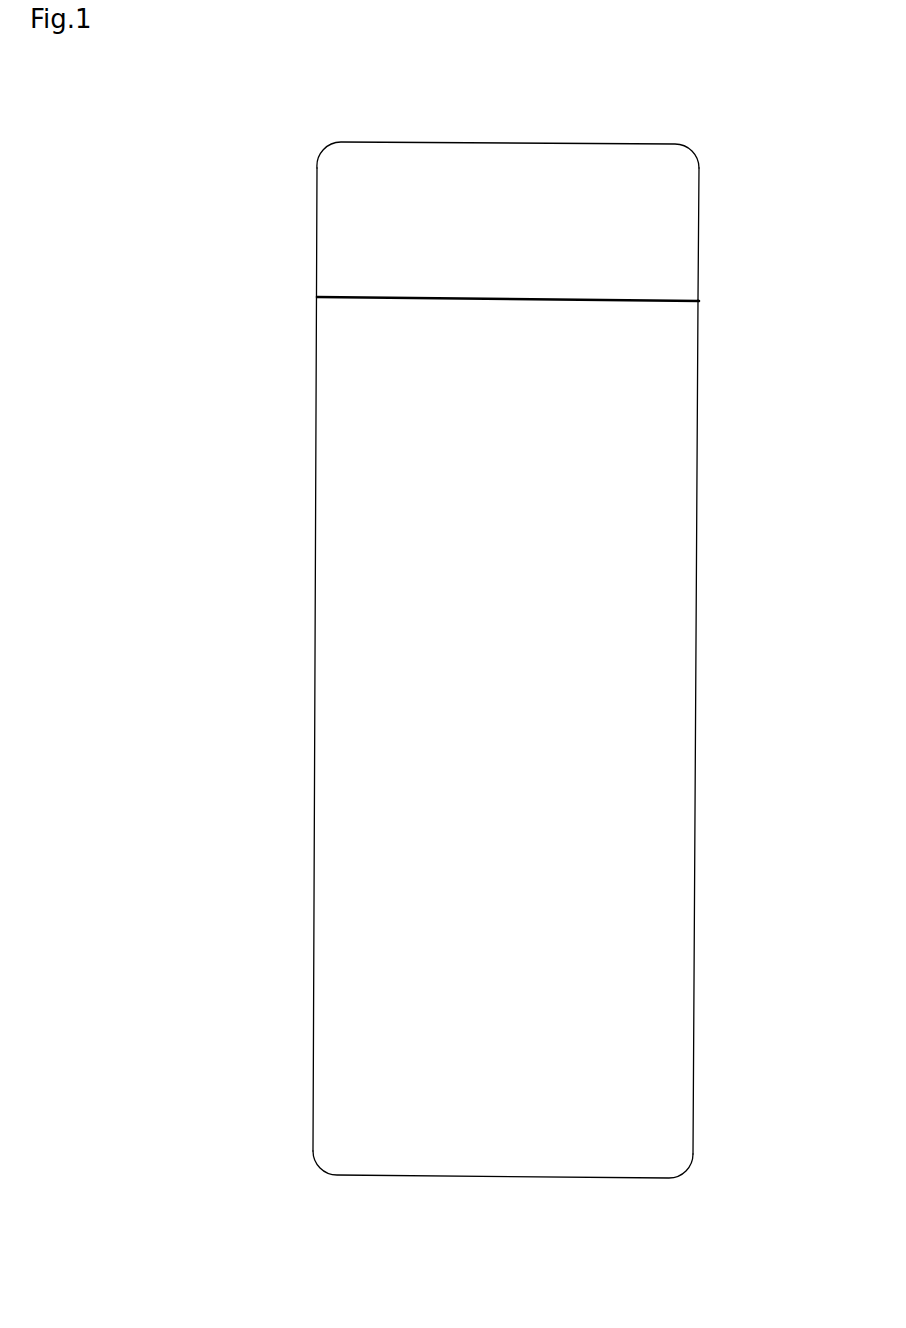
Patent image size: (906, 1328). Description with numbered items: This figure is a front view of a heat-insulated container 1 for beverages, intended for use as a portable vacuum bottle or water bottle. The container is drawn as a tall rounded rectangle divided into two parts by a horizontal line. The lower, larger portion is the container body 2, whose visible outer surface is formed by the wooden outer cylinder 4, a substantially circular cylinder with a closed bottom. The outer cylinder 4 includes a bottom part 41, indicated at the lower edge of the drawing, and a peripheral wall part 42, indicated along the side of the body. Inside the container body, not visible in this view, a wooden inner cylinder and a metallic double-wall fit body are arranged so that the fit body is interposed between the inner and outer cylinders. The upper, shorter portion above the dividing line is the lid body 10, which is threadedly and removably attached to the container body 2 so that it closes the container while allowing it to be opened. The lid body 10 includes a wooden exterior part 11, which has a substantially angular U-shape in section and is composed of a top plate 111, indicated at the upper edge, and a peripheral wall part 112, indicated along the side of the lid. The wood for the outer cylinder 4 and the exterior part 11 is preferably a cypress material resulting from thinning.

The heat-insulated container for beverages 1 is at (272, 543).
The container body 2 is at (311, 737).
The outer cylinder 4 is at (672, 826).
The lid body 10 is at (313, 240).
The exterior part 11 is at (670, 250).
The top plate 111 is at (509, 143).
The peripheral wall part 112 is at (699, 197).
The bottom part 41 is at (542, 1177).
The peripheral wall part 42 is at (697, 605).